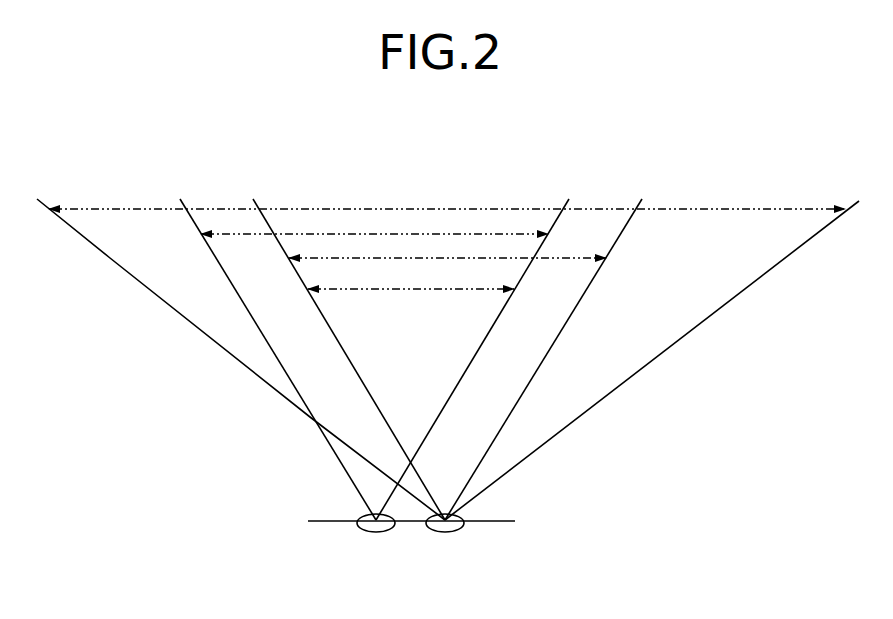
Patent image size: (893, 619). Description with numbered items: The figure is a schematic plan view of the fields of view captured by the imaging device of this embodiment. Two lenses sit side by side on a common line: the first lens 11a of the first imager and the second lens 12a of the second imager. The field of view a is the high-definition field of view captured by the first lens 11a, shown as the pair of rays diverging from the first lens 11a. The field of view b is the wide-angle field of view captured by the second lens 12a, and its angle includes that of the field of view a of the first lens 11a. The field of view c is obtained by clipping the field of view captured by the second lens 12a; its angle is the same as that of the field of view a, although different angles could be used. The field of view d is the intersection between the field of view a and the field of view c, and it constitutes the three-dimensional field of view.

The first lens 11a is at (372, 533).
The second lens 12a is at (448, 531).
The field of view captured by the first lens a is at (374, 245).
The field of view captured by the second lens b is at (447, 222).
The clipped field of view c is at (447, 269).
The three-dimensional field of view d is at (411, 301).